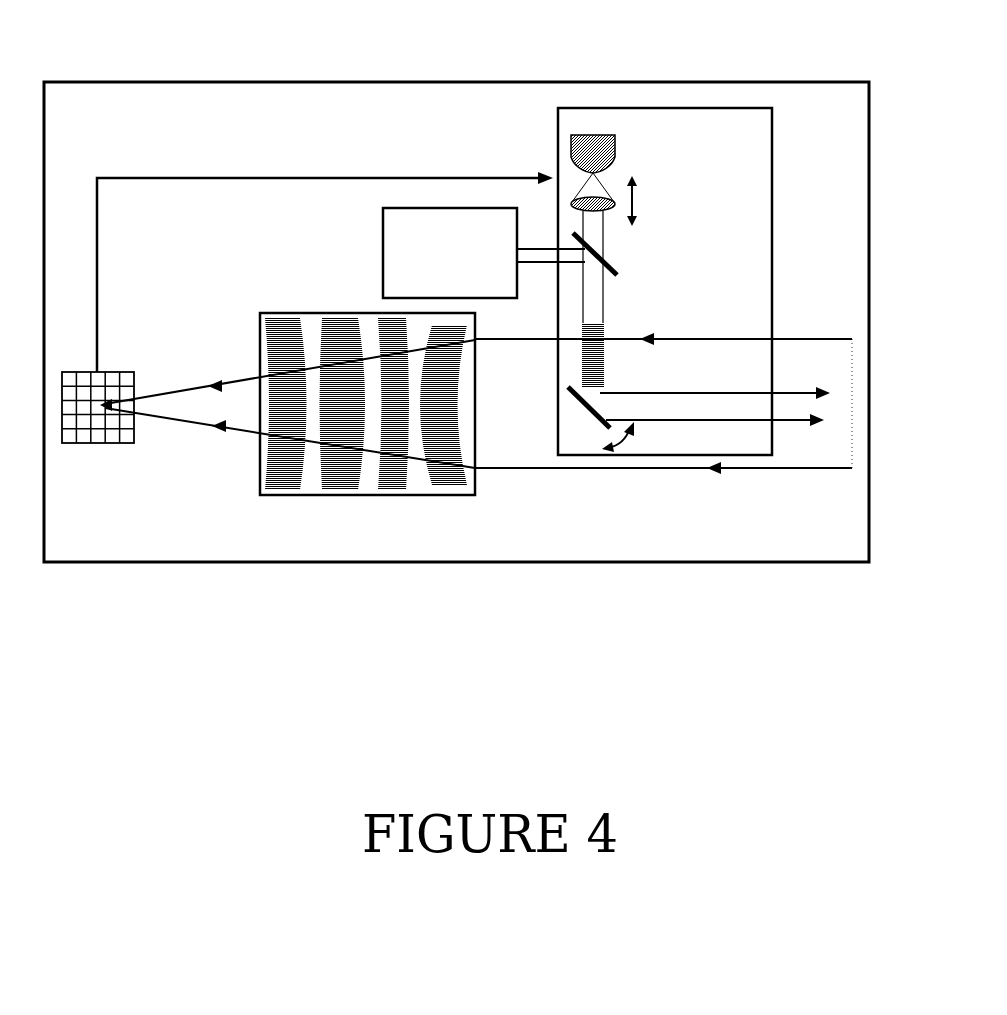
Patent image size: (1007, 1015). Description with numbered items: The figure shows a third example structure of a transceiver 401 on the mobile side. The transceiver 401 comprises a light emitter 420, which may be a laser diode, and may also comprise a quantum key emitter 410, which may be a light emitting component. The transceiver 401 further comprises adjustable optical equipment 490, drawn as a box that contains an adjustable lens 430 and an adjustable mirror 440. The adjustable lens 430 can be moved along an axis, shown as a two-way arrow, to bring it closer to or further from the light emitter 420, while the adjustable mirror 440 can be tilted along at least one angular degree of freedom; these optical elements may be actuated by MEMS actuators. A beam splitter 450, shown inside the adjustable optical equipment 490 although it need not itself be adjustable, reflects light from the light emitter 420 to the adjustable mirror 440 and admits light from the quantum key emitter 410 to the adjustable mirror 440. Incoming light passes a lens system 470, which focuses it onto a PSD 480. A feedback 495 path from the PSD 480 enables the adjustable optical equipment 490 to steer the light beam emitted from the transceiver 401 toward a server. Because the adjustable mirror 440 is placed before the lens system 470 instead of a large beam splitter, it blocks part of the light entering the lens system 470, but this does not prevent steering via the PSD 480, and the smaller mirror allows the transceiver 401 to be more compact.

The transceiver 401 is at (147, 54).
The quantum key emitter 410 is at (484, 253).
The light emitter 420 is at (616, 148).
The adjustable lens 430 is at (606, 212).
The adjustable mirror 440 is at (592, 416).
The beam splitter 450 is at (617, 275).
The lens system 470 is at (372, 495).
The PSD 480 is at (108, 443).
The adjustable optical equipment 490 is at (765, 108).
The feedback 495 is at (192, 178).